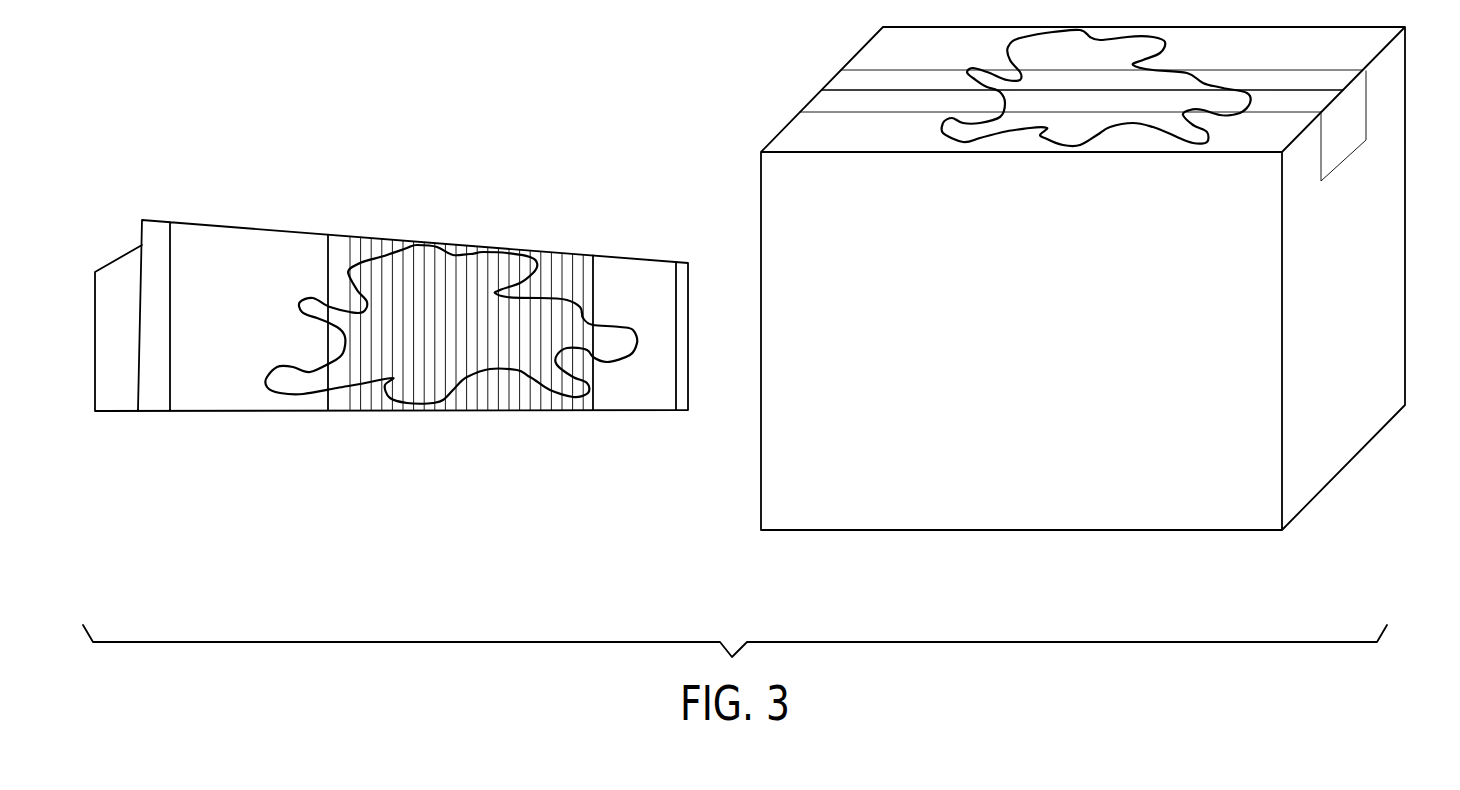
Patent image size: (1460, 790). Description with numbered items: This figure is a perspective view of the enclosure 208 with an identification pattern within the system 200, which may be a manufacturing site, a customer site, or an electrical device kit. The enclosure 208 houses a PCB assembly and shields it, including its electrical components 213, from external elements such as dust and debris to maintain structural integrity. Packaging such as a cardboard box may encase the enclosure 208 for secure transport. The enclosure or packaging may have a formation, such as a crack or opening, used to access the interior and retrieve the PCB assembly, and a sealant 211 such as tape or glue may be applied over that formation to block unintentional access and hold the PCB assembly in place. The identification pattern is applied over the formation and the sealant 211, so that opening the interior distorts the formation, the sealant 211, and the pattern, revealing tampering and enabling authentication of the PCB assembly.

The system 200 is at (1084, 311).
The enclosure 208 is at (391, 346).
The sealant 211 is at (826, 101).
The electrical components 213 is at (850, 532).